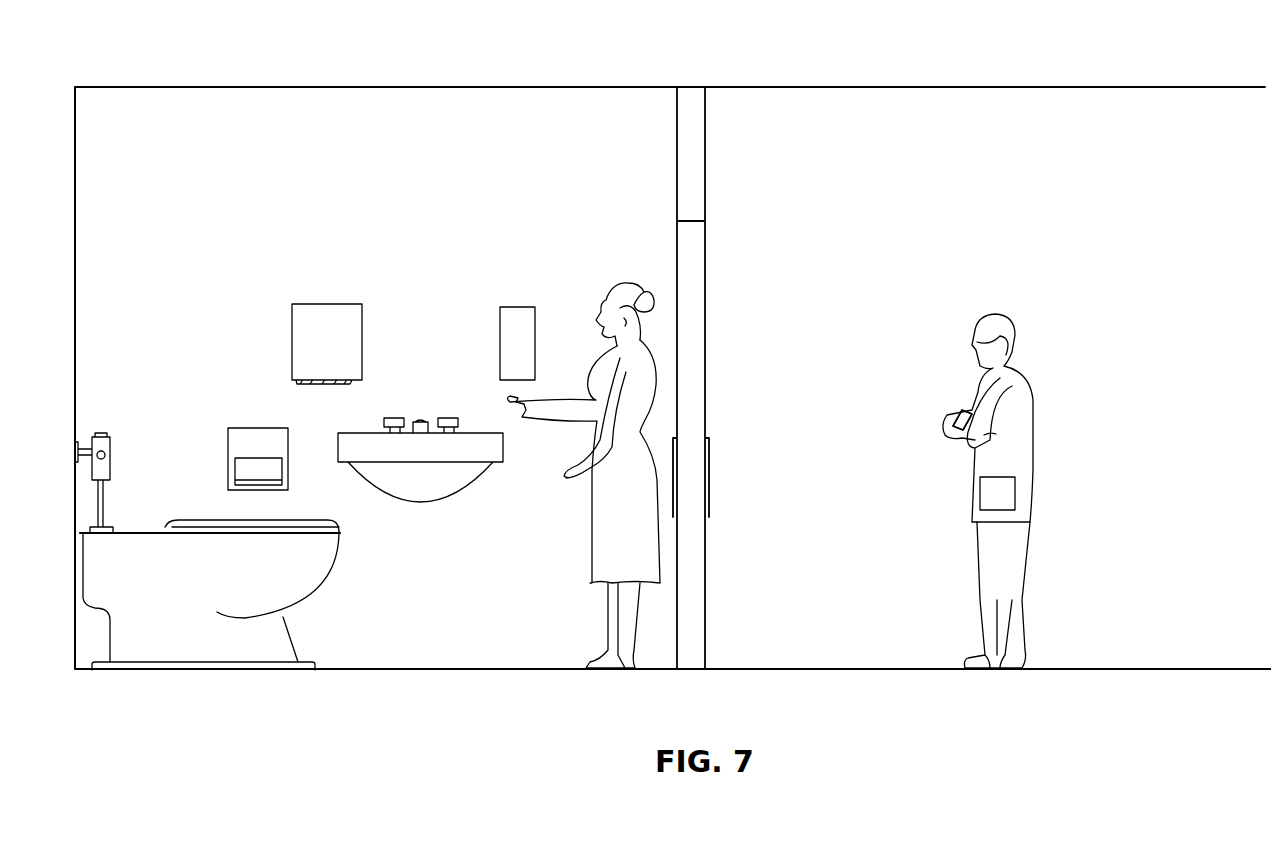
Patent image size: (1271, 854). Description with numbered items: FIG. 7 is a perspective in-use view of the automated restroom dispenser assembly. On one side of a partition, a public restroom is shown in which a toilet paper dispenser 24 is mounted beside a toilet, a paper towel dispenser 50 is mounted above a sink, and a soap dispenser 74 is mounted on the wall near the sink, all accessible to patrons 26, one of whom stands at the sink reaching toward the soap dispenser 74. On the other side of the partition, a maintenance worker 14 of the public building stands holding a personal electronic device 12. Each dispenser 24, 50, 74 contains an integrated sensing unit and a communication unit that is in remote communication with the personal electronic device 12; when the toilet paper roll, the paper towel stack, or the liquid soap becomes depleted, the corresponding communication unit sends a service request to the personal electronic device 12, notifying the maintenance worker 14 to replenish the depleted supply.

The personal electronic device 12 is at (955, 412).
The maintenance worker 14 is at (1028, 352).
The toilet paper dispenser 24 is at (265, 437).
The patrons 26 is at (632, 282).
The paper towel dispenser 50 is at (333, 332).
The soap dispenser 74 is at (522, 320).